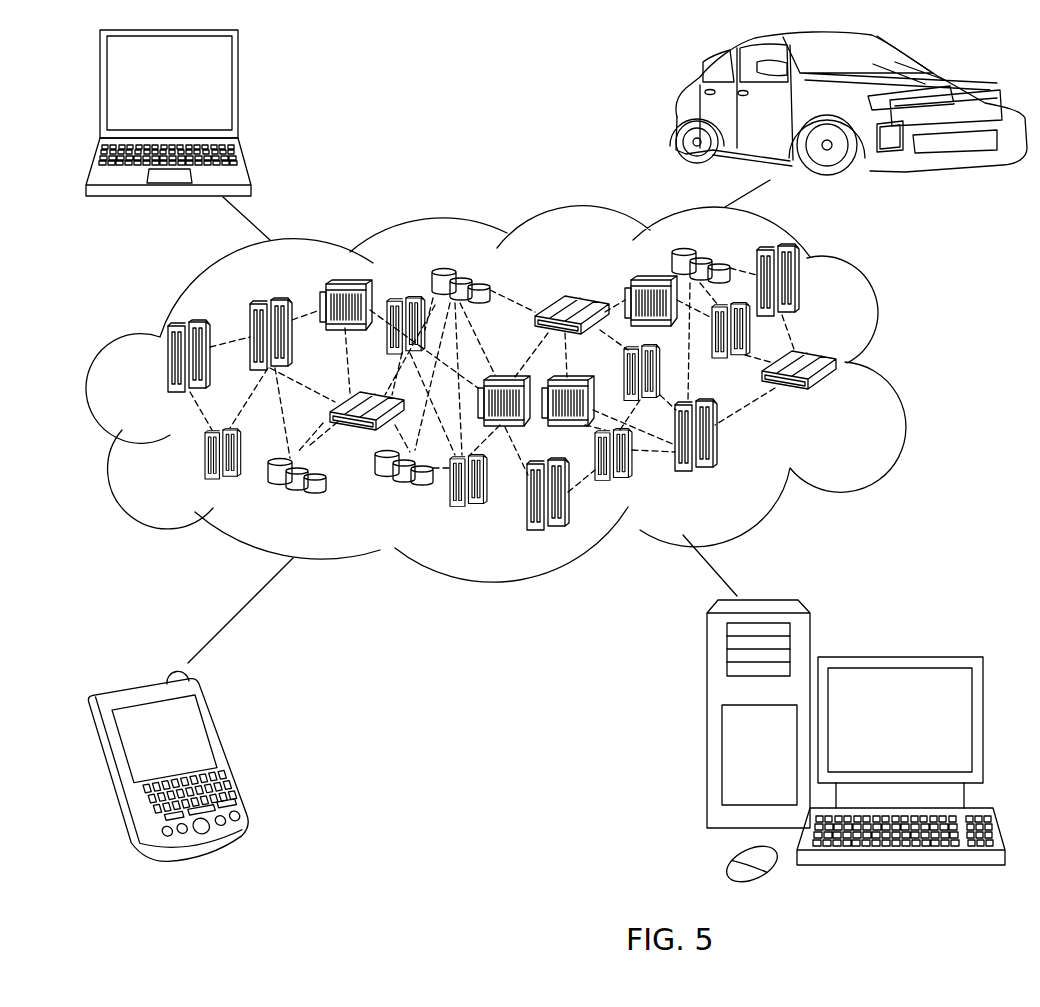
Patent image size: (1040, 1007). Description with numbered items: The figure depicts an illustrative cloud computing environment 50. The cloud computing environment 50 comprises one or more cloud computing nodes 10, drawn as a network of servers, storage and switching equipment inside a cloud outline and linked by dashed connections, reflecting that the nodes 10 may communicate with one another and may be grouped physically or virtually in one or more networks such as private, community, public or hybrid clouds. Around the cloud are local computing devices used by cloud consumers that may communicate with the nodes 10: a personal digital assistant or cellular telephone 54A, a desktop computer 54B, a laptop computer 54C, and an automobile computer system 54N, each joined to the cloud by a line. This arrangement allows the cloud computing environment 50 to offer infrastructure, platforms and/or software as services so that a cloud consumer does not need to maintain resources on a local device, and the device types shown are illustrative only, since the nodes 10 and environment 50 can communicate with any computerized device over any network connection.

The cloud computing nodes 10 is at (840, 396).
The cloud computing environment 50 is at (897, 368).
The personal digital assistant or cellular telephone 54A is at (227, 748).
The desktop computer 54B is at (896, 656).
The laptop computer 54C is at (238, 92).
The automobile computer system 54N is at (677, 108).